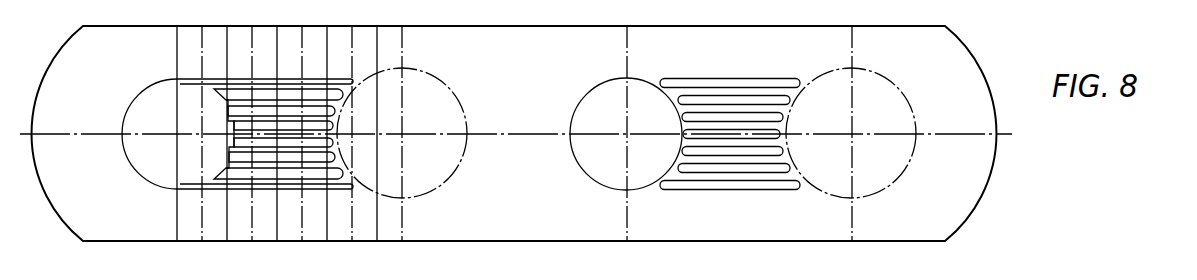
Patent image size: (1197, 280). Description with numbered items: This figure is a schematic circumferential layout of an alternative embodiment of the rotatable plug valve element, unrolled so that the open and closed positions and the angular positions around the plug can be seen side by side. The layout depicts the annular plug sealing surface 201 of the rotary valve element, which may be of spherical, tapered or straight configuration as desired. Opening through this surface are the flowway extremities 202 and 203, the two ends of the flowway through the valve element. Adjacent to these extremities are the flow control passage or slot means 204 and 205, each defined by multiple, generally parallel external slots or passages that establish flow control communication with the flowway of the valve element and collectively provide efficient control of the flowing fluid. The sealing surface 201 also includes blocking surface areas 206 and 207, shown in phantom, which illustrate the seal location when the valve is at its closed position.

The annular plug sealing surface 201 is at (528, 50).
The flowway extremity 202 is at (152, 98).
The flowway extremity 203 is at (578, 114).
The flow control passage or slot means 204 is at (290, 122).
The flow control passage or slot means 205 is at (735, 117).
The blocking surface area 206 is at (446, 179).
The blocking surface area 207 is at (886, 173).